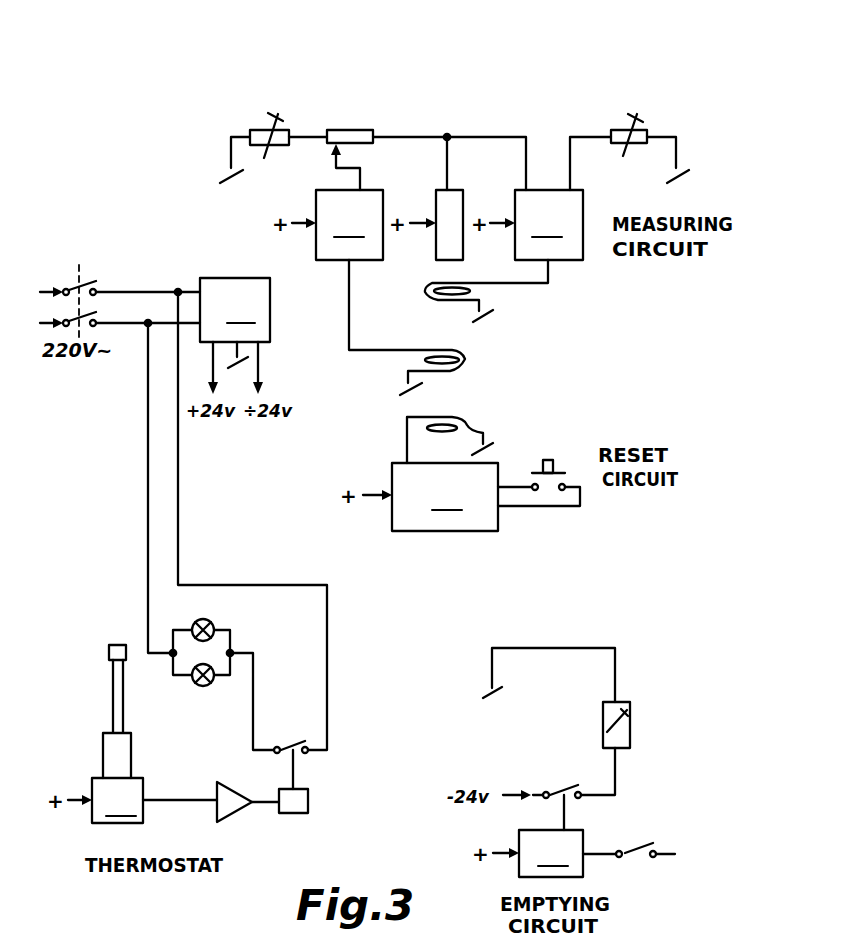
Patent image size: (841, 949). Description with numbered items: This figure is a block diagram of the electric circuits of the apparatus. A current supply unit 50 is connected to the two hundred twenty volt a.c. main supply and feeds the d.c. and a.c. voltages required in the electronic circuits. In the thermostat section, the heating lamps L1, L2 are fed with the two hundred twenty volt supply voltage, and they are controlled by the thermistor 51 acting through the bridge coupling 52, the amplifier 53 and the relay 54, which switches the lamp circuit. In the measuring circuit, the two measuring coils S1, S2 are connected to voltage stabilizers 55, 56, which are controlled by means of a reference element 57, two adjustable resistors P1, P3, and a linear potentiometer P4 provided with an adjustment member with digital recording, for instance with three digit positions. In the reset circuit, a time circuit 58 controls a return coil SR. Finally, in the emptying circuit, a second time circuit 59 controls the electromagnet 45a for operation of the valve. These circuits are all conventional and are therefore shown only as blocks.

The adjustable resistor P1 is at (261, 137).
The linear potentiometer P4 is at (348, 137).
The adjustable resistor P3 is at (620, 135).
The voltage stabilizer 55 is at (349, 225).
The reference element 57 is at (453, 196).
The voltage stabilizer 56 is at (549, 225).
The measuring coil S2 is at (426, 291).
The measuring coil S1 is at (466, 358).
The return coil SR is at (466, 419).
The time circuit 58 is at (445, 497).
The current supply unit 50 is at (235, 336).
The heating lamp L1 is at (194, 621).
The heating lamp L2 is at (195, 684).
The thermistor 51 is at (118, 645).
The bridge coupling 52 is at (117, 800).
The amplifier 53 is at (231, 808).
The relay 54 is at (299, 811).
The electromagnet 45a is at (603, 727).
The second time circuit 59 is at (551, 853).